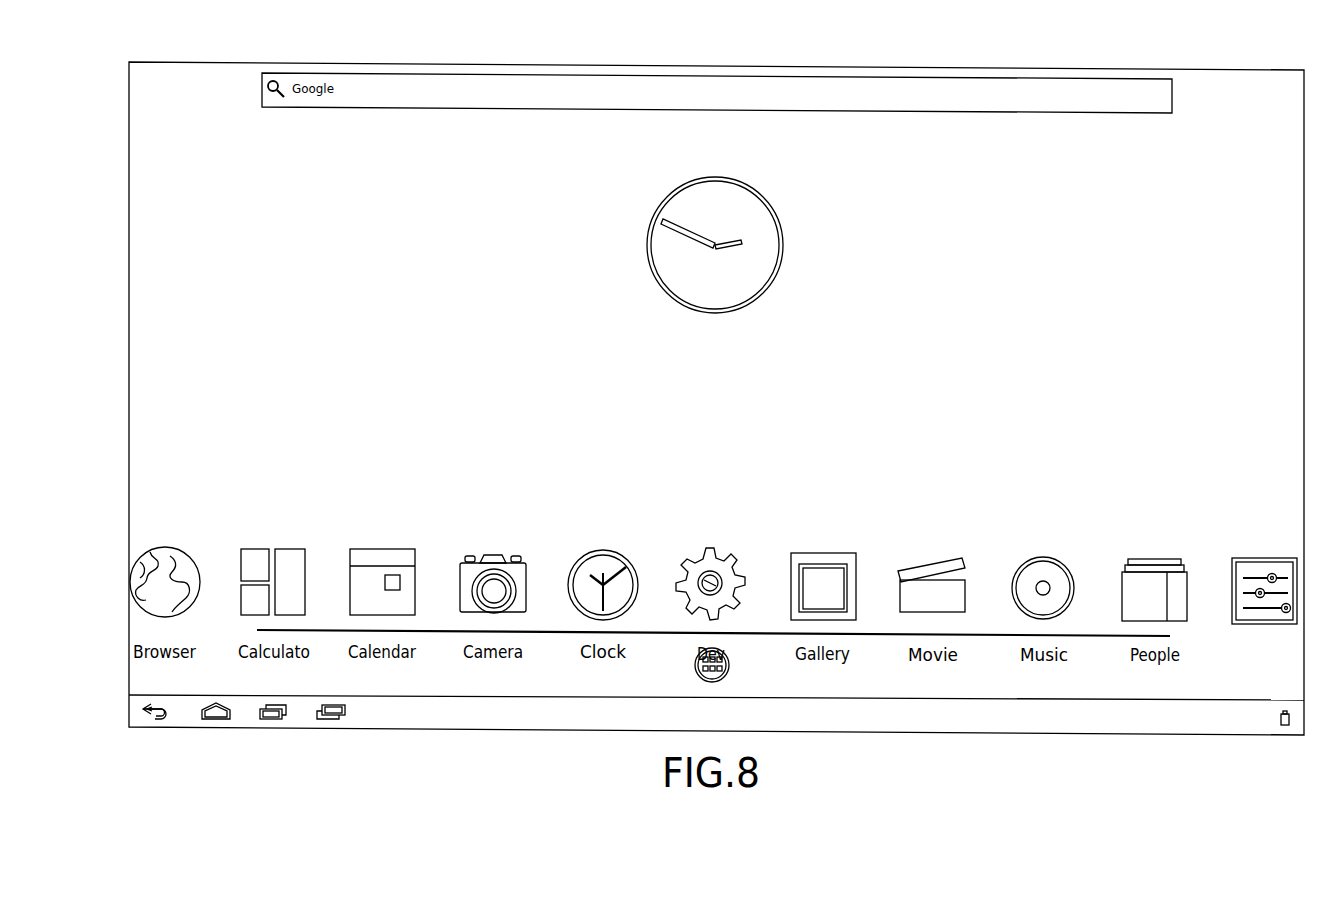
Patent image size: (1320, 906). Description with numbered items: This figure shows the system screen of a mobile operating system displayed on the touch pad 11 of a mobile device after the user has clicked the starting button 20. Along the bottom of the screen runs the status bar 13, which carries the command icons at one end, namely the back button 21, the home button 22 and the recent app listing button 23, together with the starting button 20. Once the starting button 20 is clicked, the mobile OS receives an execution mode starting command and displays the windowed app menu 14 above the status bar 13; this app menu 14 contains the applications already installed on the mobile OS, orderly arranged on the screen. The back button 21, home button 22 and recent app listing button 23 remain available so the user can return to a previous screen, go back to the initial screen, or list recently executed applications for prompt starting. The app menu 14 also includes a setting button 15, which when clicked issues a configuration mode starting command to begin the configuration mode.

The touch pad 11 is at (635, 65).
The status bar 13 is at (513, 723).
The windowed app menu 14 is at (738, 618).
The setting button 15 is at (1238, 612).
The starting button 20 is at (333, 719).
The back button 21 is at (157, 719).
The home button 22 is at (222, 719).
The recent app listing button 23 is at (275, 719).